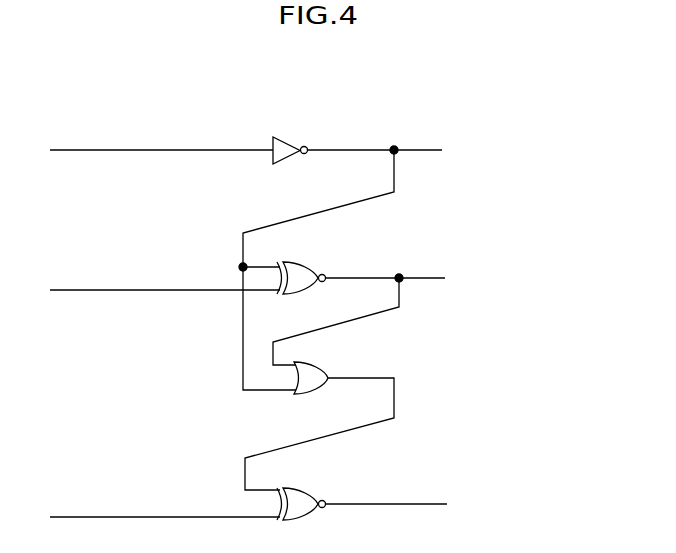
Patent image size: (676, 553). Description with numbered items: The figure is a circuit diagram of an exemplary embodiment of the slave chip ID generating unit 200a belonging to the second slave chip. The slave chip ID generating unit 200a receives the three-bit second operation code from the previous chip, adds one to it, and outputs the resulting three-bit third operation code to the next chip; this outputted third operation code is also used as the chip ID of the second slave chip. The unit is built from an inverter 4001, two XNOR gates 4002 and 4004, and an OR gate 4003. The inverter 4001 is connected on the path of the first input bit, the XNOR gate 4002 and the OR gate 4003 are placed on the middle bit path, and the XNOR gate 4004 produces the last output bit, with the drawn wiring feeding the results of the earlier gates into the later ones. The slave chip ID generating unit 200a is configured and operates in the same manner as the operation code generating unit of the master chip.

The slave chip ID generating unit 200a is at (122, 66).
The inverter 4001 is at (292, 145).
The XNOR gate 4002 is at (305, 262).
The OR gate 4003 is at (315, 362).
The XNOR gate 4004 is at (305, 488).